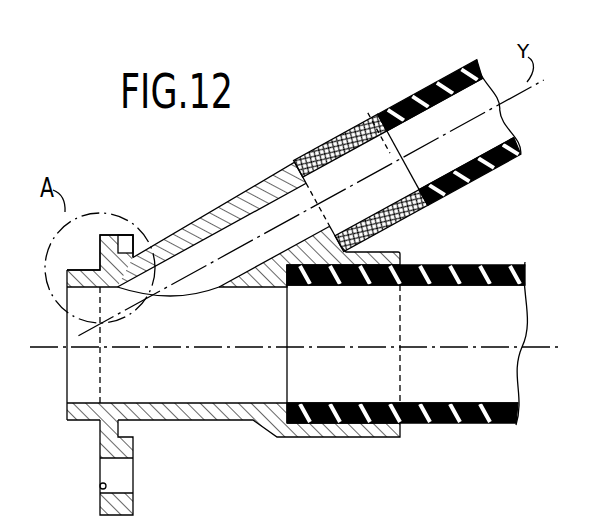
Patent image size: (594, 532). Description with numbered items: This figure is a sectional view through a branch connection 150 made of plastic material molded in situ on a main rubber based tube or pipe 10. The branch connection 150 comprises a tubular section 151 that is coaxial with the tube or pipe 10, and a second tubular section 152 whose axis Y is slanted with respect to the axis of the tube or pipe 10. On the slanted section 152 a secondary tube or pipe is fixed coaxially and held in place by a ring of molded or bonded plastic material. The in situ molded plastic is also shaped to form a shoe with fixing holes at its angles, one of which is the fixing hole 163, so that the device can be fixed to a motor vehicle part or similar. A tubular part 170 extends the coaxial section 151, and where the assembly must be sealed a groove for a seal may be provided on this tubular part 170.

The tube or pipe 10 is at (483, 424).
The branch connection 150 is at (257, 448).
The tubular section 151 is at (217, 421).
The tubular section 152 is at (217, 210).
The fixing hole 163 is at (100, 486).
The tubular part 170 is at (66, 408).